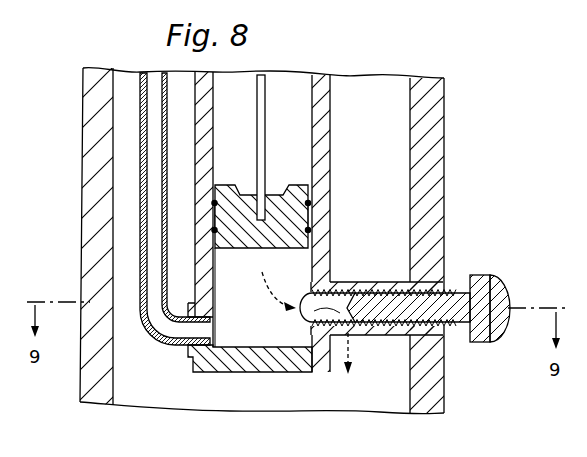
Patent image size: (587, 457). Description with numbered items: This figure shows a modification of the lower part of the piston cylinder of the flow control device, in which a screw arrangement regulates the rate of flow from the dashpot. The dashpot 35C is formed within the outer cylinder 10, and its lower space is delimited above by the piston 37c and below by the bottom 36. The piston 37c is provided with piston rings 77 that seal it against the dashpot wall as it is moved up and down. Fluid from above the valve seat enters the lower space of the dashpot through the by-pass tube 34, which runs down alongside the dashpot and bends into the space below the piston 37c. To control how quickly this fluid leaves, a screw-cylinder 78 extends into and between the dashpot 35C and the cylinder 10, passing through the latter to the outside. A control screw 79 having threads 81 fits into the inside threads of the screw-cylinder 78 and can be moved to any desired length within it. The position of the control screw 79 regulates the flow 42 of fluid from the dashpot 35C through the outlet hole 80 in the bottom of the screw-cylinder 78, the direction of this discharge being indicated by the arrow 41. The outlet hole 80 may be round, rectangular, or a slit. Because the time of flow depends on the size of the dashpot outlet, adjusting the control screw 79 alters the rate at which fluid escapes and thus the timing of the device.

The cylinder 10 is at (92, 195).
The by-pass tube 34 is at (152, 321).
The dashpot 35C is at (322, 141).
The bottom 36 is at (245, 365).
The piston 37c is at (246, 244).
The arrow 41 is at (345, 352).
The flow 42 is at (303, 318).
The piston rings 77 is at (312, 226).
The screw-cylinder 78 is at (340, 291).
The control screw 79 is at (462, 298).
The outlet hole 80 is at (341, 329).
The threads 81 is at (400, 329).